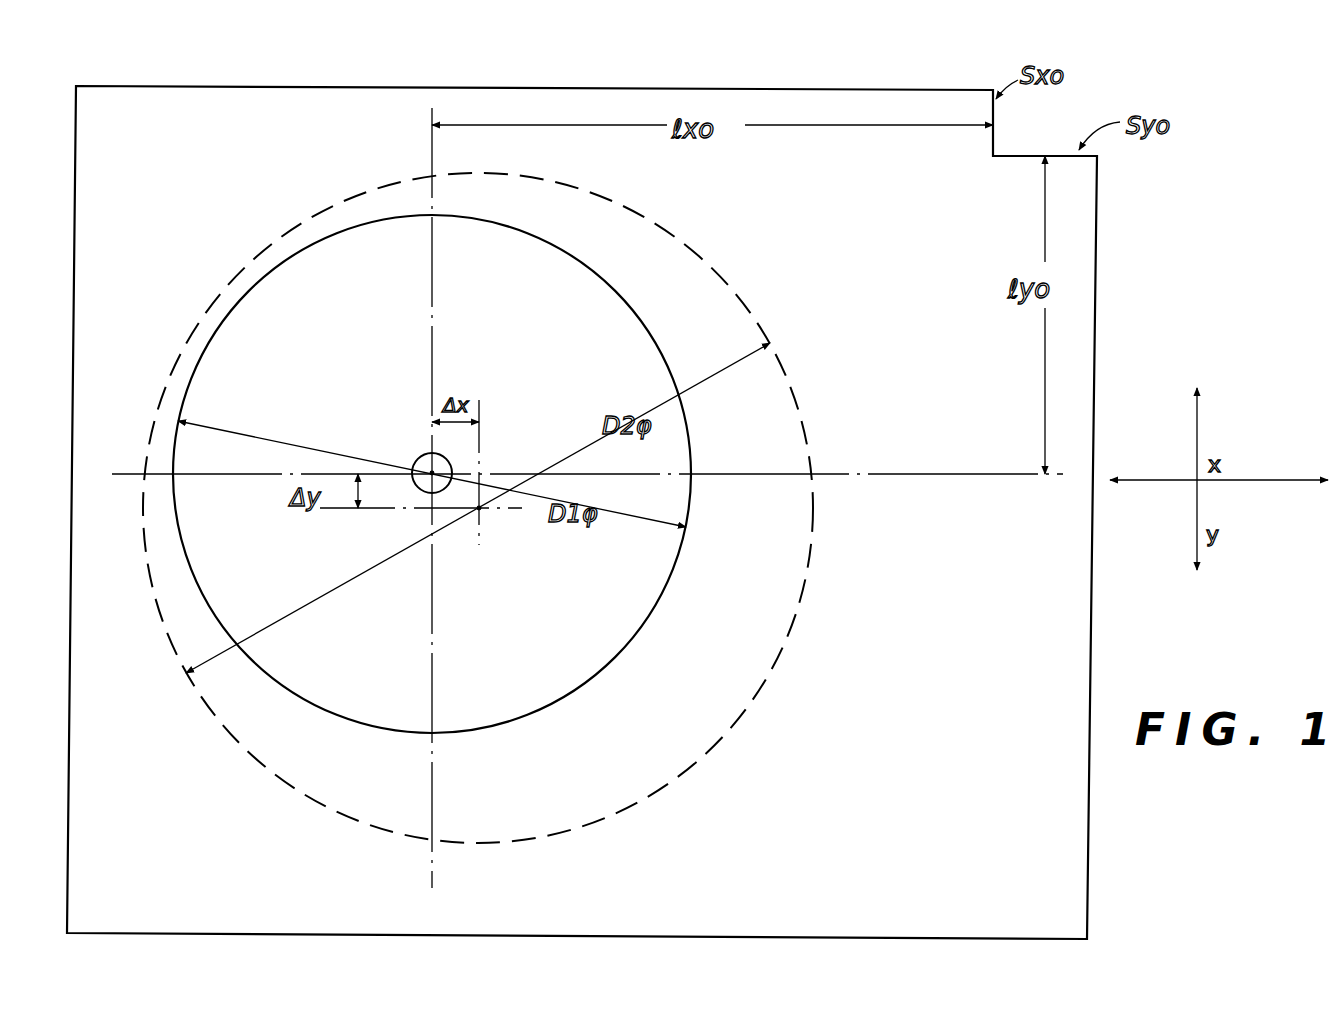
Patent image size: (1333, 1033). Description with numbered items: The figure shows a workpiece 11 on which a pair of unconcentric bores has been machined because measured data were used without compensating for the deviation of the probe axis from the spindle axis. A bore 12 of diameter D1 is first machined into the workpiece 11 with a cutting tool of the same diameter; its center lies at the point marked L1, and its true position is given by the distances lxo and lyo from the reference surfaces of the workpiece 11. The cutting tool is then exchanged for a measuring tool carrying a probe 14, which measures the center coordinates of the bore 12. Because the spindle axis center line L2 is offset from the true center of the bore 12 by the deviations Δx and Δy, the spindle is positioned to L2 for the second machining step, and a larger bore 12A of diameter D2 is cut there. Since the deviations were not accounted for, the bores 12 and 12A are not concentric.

The workpiece 11 is at (572, 88).
The bore 12 is at (652, 343).
The bore 12A is at (806, 456).
The probe 14 is at (442, 494).
The actual center of hole L1 is at (430, 468).
The spindle axis center line L2 is at (481, 510).